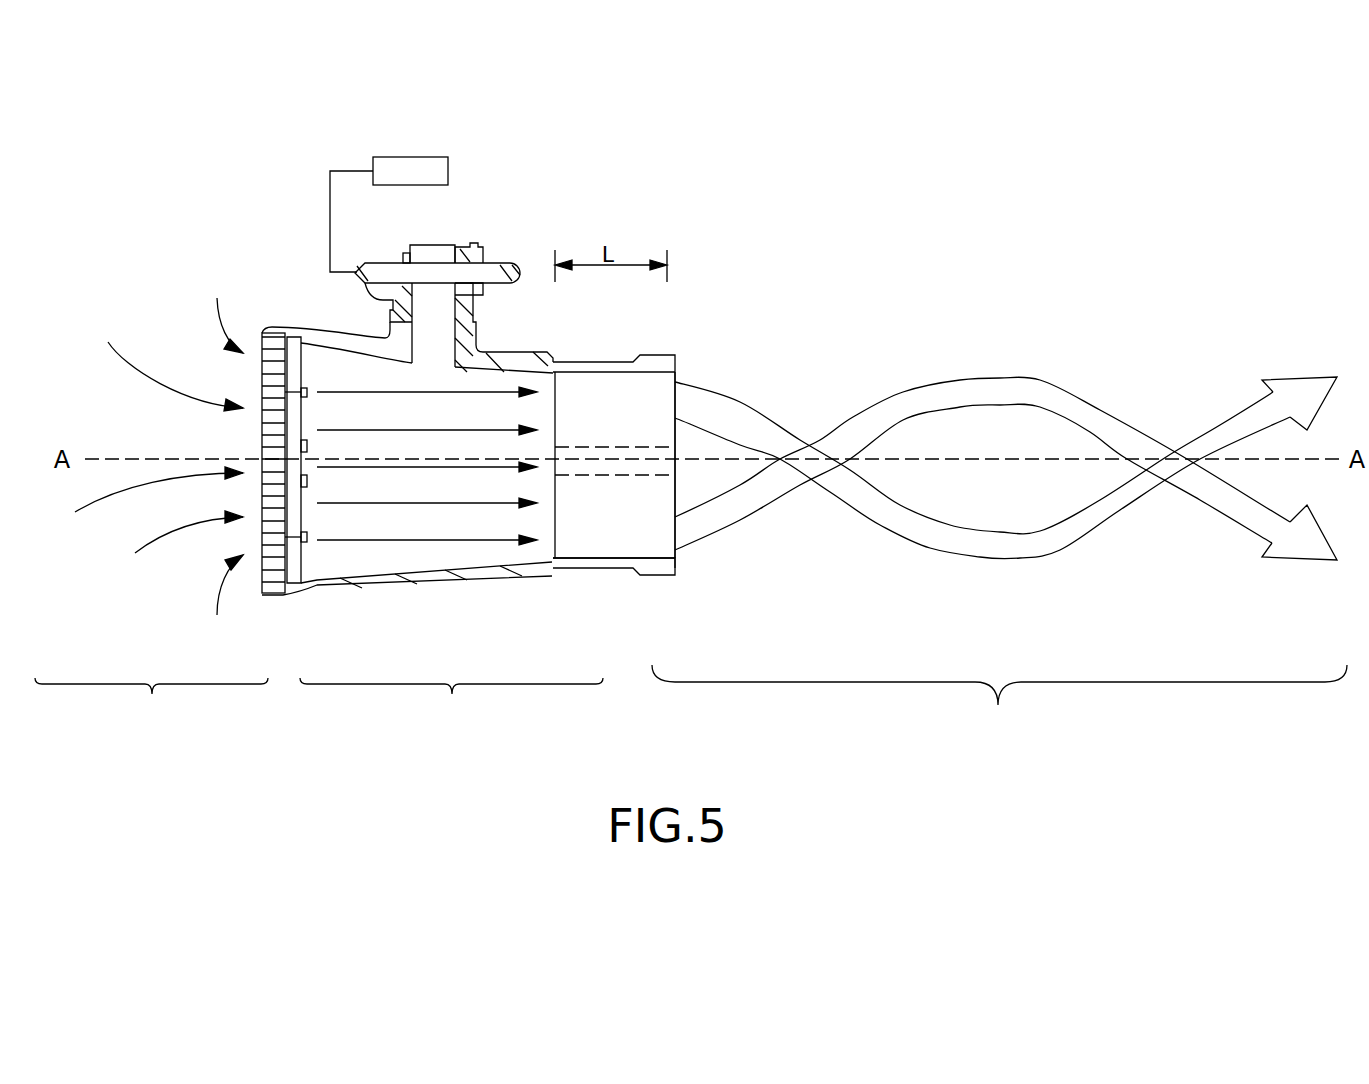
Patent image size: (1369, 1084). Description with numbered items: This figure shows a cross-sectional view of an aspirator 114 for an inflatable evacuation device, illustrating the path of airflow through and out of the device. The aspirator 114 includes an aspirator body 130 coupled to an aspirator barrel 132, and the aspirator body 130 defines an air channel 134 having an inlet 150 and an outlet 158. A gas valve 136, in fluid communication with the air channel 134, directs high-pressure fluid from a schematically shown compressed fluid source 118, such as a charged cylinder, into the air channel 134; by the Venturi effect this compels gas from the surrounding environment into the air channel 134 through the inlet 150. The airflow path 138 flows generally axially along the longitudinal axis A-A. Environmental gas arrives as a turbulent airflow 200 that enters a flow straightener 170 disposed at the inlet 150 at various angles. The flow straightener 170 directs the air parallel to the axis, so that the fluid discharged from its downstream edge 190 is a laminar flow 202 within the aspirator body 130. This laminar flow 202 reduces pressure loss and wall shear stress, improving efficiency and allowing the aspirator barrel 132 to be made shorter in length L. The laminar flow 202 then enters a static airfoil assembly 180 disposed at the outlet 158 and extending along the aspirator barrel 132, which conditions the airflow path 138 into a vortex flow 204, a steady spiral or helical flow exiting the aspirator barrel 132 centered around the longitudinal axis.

The aspirator 114 is at (276, 291).
The compressed fluid source 118 is at (389, 214).
The aspirator body 130 is at (347, 583).
The aspirator barrel 132 is at (600, 358).
The air channel 134 is at (455, 523).
The gas valve 136 is at (455, 247).
The airflow path 138 is at (400, 470).
The inlet 150 is at (262, 490).
The outlet 158 is at (677, 487).
The flow straightener 170 is at (277, 558).
The static airfoil assembly 180 is at (620, 545).
The downstream edge 190 is at (290, 418).
The turbulent airflow 200 is at (151, 707).
The laminar flow 202 is at (451, 707).
The vortex flow 204 is at (999, 702).